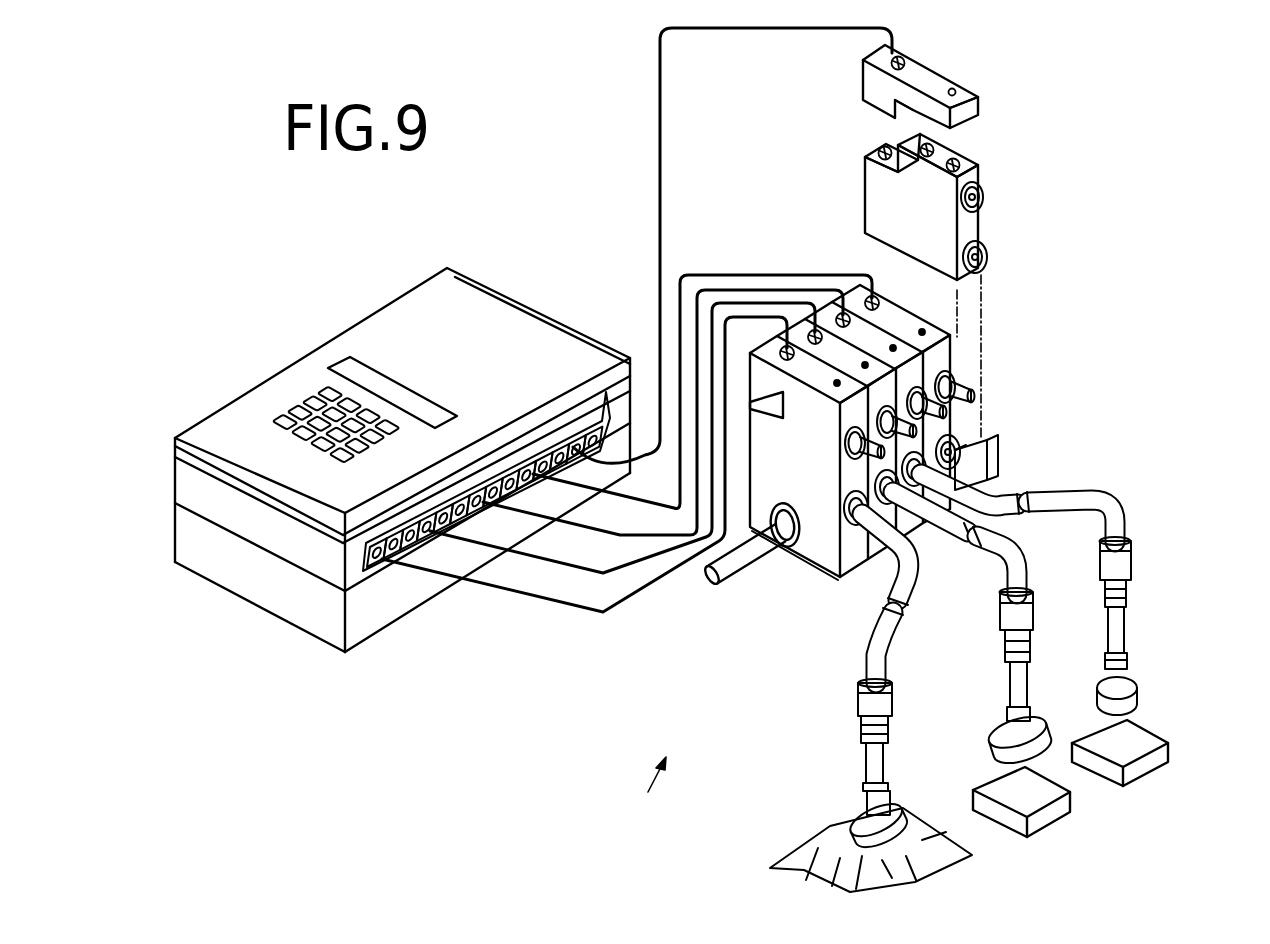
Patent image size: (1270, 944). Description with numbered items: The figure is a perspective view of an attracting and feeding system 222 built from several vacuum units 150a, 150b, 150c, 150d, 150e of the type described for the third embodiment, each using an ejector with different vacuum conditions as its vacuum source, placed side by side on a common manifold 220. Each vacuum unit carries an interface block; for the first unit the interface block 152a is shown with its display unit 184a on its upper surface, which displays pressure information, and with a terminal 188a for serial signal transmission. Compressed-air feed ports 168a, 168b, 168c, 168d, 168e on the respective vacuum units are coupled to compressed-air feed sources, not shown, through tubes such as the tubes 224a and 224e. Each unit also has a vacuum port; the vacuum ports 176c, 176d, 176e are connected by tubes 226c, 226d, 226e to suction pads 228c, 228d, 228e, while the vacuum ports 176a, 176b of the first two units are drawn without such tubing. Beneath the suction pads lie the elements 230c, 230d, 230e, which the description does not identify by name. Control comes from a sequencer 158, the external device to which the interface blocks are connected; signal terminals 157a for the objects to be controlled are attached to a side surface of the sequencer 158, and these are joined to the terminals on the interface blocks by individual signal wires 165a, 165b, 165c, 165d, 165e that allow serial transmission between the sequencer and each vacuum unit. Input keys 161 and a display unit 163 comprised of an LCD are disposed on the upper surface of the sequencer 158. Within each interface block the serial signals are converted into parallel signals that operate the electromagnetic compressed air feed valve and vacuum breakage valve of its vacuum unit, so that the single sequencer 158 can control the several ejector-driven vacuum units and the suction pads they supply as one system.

The sequencer 158 is at (414, 318).
The input keys 161 is at (282, 418).
The display unit 163 is at (343, 360).
The signal terminals 157a is at (384, 572).
The signal wire 165a is at (650, 506).
The signal wire 165b is at (615, 536).
The signal wire 165c is at (567, 565).
The signal wire 165d is at (545, 599).
The signal wire 165e is at (513, 591).
The vacuum unit 150a is at (1087, 153).
The vacuum unit 150b is at (845, 281).
The vacuum unit 150c is at (816, 290).
The vacuum unit 150d is at (788, 306).
The vacuum unit 150e is at (736, 348).
The interface block 152a is at (940, 84).
The display unit 184a is at (975, 95).
The terminal 188a is at (900, 57).
The compressed-air feed port 168a is at (986, 197).
The compressed-air feed port 168b is at (974, 388).
The compressed-air feed port 168c is at (950, 392).
The compressed-air feed port 168d is at (876, 428).
The compressed-air feed port 168e is at (850, 458).
The vacuum port 176a is at (990, 257).
The vacuum port 176b is at (962, 445).
The vacuum port 176c is at (928, 465).
The vacuum port 176d is at (898, 500).
The vacuum port 176e is at (856, 527).
The manifold 220 is at (766, 556).
The tube 224a is at (992, 438).
The tube 224e is at (816, 586).
The tube 226c is at (1108, 490).
The tube 226d is at (1028, 572).
The tube 226e is at (884, 650).
The suction pad 228c is at (1137, 698).
The suction pad 228d is at (991, 752).
The suction pad 228e is at (850, 818).
The workpiece 230c is at (1165, 738).
The workpiece 230d is at (1068, 802).
The workpiece 230e is at (806, 850).
The attracting and feeding system 222 is at (656, 828).